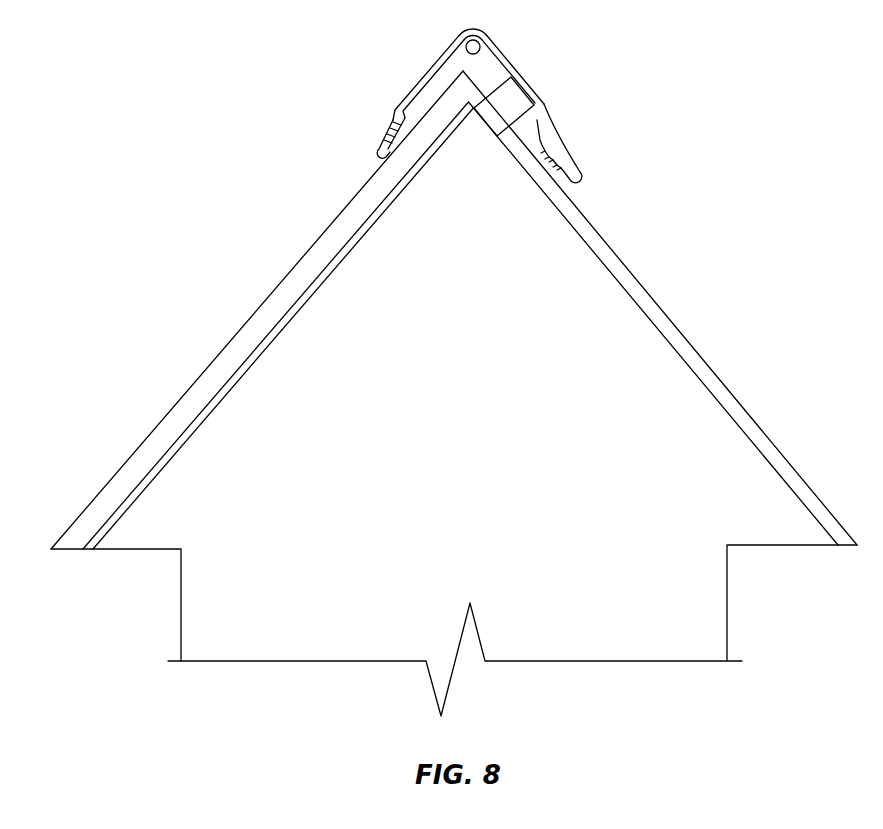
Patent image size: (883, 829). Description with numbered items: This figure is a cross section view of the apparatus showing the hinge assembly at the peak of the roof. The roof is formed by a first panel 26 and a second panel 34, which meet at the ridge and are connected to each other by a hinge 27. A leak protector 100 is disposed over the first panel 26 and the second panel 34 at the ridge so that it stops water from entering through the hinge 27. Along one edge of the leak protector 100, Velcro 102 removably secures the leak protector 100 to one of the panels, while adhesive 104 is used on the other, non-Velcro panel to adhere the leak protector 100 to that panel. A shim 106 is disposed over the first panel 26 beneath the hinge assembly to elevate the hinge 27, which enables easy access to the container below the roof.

The second panel 34 is at (259, 314).
The first panel 26 is at (658, 312).
The hinge 27 is at (442, 84).
The leak protector 100 is at (518, 78).
The Velcro 102 is at (582, 172).
The adhesive 104 is at (377, 151).
The shim 106 is at (512, 117).